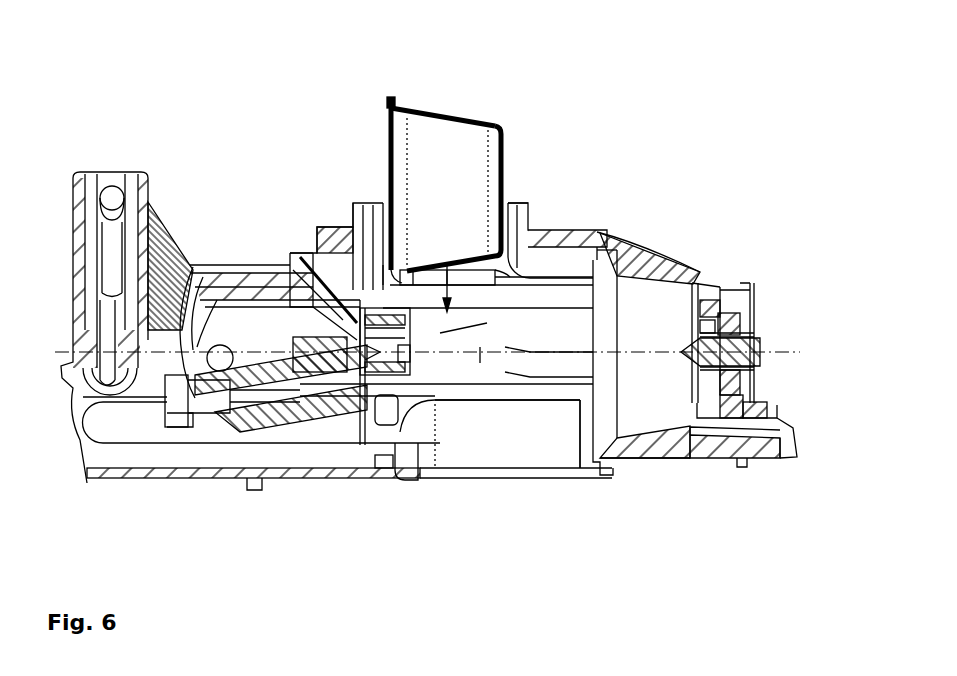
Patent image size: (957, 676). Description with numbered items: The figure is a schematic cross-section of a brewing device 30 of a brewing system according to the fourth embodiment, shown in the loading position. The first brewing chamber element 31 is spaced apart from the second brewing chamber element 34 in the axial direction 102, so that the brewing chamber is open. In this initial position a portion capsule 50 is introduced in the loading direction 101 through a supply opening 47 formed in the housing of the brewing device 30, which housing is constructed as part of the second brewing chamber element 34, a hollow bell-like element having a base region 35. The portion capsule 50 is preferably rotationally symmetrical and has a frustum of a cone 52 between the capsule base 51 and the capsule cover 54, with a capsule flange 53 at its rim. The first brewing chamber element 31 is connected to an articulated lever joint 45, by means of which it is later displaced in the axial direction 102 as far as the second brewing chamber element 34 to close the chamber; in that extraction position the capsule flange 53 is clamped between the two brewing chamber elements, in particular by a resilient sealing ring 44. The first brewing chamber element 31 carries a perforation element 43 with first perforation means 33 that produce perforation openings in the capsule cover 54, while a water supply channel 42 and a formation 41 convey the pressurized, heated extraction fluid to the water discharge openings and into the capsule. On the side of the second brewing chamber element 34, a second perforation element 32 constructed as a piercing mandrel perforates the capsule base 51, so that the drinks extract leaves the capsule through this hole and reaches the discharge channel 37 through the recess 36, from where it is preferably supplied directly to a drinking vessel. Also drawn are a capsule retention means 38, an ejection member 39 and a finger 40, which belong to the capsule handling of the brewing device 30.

The brewing device 30 is at (620, 155).
The first brewing chamber element 31 is at (265, 410).
The second perforation element 32 is at (760, 335).
The first perforation means 33 is at (408, 322).
The second brewing chamber element 34 is at (660, 448).
The base region 35 is at (684, 326).
The recess 36 is at (760, 390).
The discharge channel 37 is at (772, 438).
The capsule retention means 38 is at (368, 460).
The ejection member 39 is at (416, 447).
The finger 40 is at (340, 445).
The formation 41 is at (300, 410).
The water supply channel 42 is at (237, 407).
The perforation element 43 is at (305, 248).
The sealing ring 44 is at (347, 262).
The articulated lever joint 45 is at (166, 226).
The supply opening 47 is at (513, 199).
The portion capsule 50 is at (480, 118).
The capsule base 51 is at (507, 142).
The frustum of a cone 52 is at (430, 110).
The capsule flange 53 is at (387, 100).
The capsule cover 54 is at (387, 142).
The loading direction 101 is at (603, 272).
The axial direction 102 is at (765, 358).